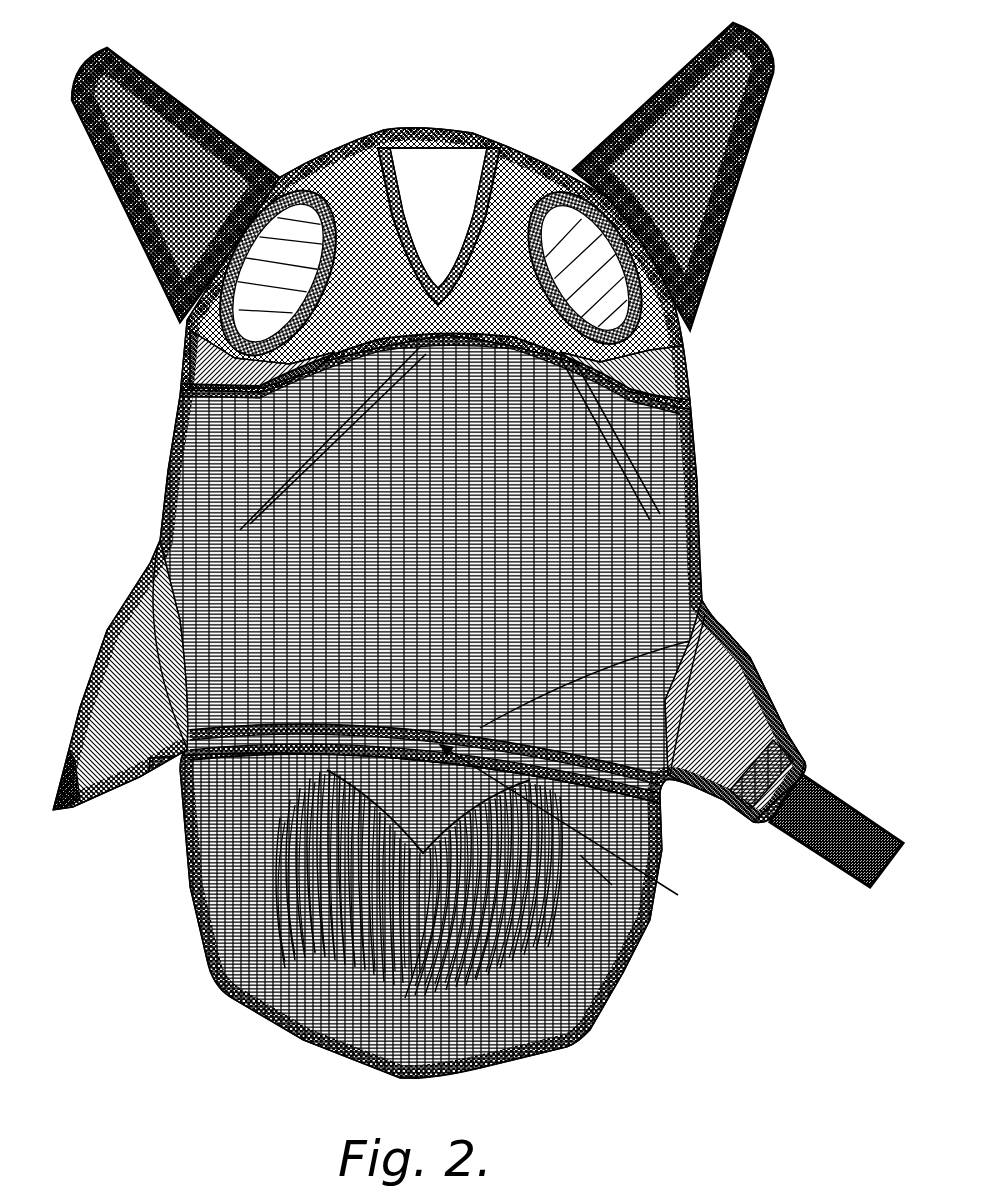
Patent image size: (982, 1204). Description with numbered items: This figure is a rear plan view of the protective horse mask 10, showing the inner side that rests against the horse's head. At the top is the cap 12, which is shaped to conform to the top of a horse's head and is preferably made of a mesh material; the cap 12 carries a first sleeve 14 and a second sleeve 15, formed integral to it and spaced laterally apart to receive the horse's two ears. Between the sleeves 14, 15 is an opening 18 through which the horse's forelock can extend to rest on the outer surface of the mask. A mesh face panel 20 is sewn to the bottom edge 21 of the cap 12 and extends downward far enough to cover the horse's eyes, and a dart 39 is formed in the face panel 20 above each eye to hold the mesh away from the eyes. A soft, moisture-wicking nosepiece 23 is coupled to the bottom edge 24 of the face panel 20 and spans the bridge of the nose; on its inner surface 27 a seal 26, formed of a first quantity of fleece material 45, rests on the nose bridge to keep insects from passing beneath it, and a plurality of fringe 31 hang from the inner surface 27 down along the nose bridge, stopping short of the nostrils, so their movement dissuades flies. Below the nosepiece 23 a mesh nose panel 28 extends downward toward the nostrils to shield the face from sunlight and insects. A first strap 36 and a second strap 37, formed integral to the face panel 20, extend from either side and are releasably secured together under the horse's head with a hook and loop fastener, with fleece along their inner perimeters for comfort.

The protective mask 10 is at (447, 557).
The cap region 12 is at (335, 160).
The first sleeve 14 is at (772, 122).
The second sleeve 15 is at (78, 82).
The opening 18 is at (445, 227).
The face panel 20 is at (655, 582).
The bottom edge 21 is at (690, 410).
The nosepiece 23 is at (574, 826).
The bottom edge 24 is at (108, 632).
The seal 26 is at (655, 800).
The inner surface 27 is at (612, 885).
The nose panel 28 is at (598, 985).
The fringe 31 is at (355, 1000).
The first strap 36 is at (62, 740).
The second strap 37 is at (762, 668).
The dart 39 is at (205, 470).
The first quantity of fleece material 45 is at (725, 632).